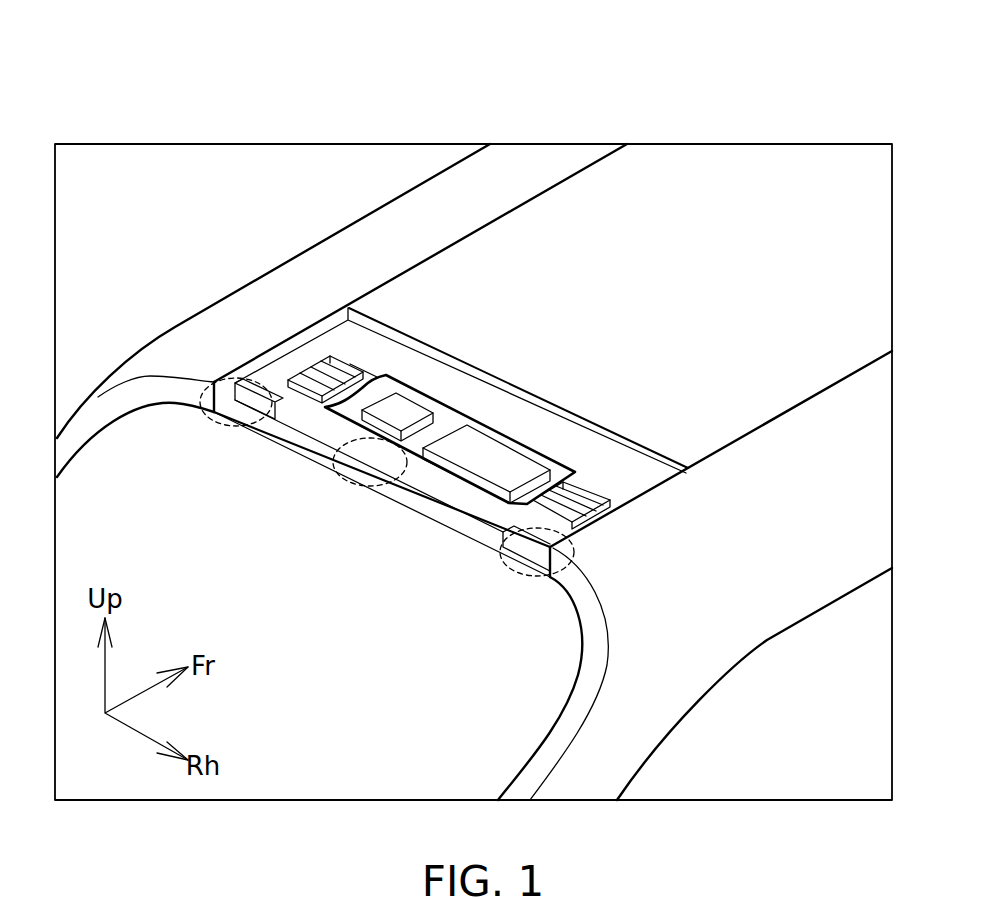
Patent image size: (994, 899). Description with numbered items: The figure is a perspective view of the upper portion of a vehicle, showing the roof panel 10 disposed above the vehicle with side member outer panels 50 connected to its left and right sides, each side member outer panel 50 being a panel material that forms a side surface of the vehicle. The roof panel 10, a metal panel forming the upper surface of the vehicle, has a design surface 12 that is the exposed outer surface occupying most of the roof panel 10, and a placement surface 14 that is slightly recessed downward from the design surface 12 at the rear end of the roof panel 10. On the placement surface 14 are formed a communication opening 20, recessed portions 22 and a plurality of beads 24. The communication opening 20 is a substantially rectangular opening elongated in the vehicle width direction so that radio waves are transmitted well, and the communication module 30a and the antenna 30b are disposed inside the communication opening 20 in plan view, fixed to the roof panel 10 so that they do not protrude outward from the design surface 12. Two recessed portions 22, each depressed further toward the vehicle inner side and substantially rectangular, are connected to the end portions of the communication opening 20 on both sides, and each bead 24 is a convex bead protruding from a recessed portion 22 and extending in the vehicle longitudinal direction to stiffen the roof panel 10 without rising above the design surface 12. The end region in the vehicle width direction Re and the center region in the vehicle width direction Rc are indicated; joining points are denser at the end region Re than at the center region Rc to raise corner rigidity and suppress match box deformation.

The roof panel 10 is at (707, 255).
The design surface 12 is at (589, 245).
The placement surface 14 is at (273, 383).
The communication opening 20 is at (443, 405).
The recessed portion 22 is at (350, 385).
The bead 24 is at (580, 500).
The communication module 30a is at (392, 412).
The antenna 30b is at (478, 455).
The side member outer panel 50 is at (397, 227).
The end region in the vehicle width direction Re is at (213, 424).
The center region in the vehicle width direction Rc is at (347, 488).